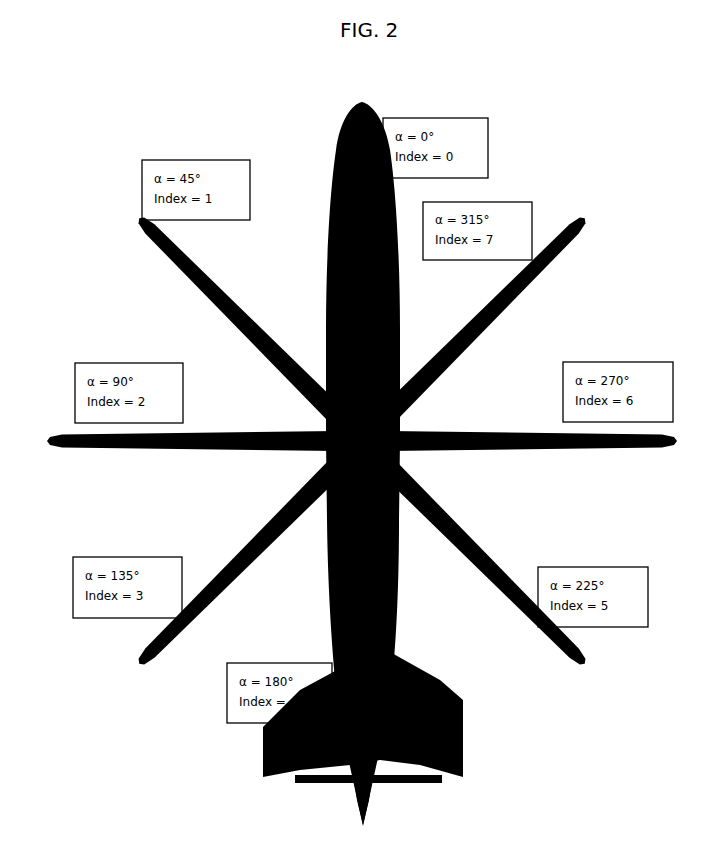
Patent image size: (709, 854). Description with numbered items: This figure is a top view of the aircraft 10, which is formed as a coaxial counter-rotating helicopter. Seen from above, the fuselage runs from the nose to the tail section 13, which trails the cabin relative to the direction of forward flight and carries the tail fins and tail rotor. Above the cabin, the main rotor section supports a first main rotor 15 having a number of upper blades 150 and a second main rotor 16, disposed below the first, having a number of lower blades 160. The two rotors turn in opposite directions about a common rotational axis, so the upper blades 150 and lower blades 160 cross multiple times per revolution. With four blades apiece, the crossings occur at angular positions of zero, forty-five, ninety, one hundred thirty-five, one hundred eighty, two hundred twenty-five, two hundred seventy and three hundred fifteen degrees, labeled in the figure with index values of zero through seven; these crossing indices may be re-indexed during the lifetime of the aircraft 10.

The aircraft 10 is at (370, 449).
The tail section 13 is at (374, 784).
The first main rotor 15 is at (520, 320).
The second main rotor 16 is at (520, 299).
The blades 150 is at (533, 303).
The blades 160 is at (533, 303).